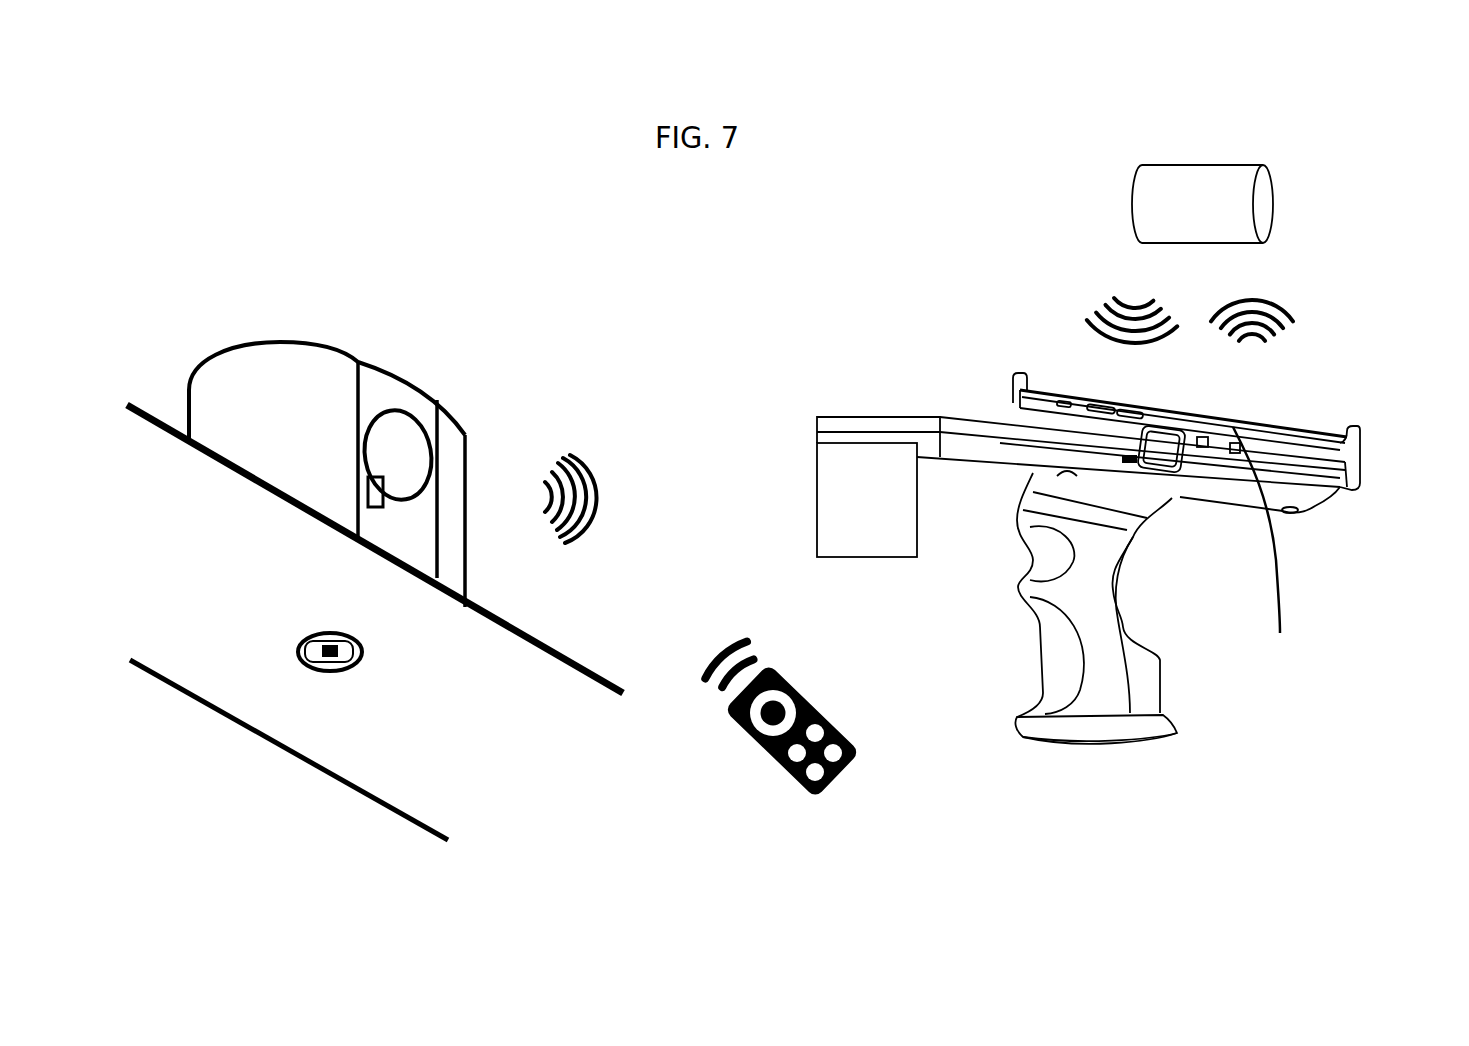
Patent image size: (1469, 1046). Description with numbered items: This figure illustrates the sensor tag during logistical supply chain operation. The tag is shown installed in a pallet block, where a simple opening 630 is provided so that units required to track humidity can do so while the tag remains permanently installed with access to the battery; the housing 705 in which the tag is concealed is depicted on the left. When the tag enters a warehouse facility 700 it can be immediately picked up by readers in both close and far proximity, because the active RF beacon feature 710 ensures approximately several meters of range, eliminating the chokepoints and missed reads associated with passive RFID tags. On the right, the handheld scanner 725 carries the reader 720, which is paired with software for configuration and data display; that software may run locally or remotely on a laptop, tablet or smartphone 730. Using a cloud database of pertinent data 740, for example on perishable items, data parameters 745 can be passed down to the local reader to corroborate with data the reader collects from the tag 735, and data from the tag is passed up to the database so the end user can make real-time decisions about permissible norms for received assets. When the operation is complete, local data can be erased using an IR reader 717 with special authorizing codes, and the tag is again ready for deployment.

The warehouse facility 700 is at (388, 178).
The housing 705 is at (413, 405).
The opening 630 is at (380, 507).
The active RF beacon feature 710 is at (575, 462).
The IR reader 717 is at (773, 700).
The reader 720 is at (863, 500).
The handheld scanner device 725 is at (933, 398).
The laptop, tablet, smartphone 730 is at (1265, 544).
The tag 735 is at (1302, 352).
The cloud database of pertinent data 740 is at (1280, 200).
The data parameters 745 is at (1097, 318).